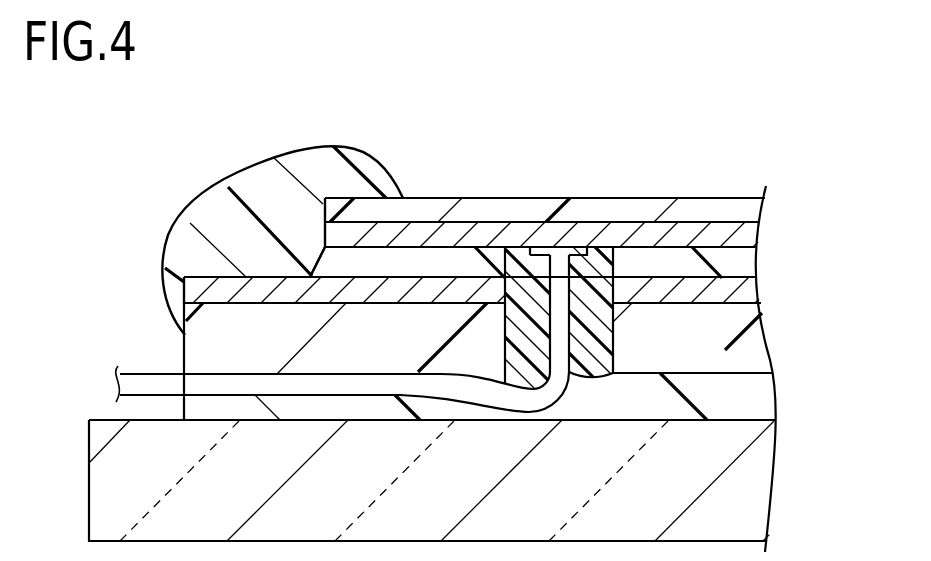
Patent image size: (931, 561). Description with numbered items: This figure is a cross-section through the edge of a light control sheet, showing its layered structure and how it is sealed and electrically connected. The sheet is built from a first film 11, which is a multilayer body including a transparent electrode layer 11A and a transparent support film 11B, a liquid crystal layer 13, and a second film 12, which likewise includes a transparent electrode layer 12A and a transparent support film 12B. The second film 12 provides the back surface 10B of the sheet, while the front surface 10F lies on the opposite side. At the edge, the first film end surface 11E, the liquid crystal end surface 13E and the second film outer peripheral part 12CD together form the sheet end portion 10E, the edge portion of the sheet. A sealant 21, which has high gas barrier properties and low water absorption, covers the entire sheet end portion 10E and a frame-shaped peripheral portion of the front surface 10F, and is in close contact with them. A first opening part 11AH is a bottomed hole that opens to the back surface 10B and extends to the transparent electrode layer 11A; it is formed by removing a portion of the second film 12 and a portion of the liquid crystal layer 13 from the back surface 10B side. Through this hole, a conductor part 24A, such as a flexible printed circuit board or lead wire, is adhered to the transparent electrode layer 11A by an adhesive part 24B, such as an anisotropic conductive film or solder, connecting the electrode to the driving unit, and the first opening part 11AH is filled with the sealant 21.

The back surface 10B is at (752, 375).
The sheet end portion 10E is at (194, 223).
The front surface 10F is at (722, 199).
The first film 11 is at (597, 225).
The transparent electrode layer 11A is at (748, 236).
The transparent support film 11B is at (748, 211).
The first opening part 11AH is at (602, 247).
The first film end surface 11E is at (323, 250).
The second film 12 is at (527, 348).
The transparent electrode layer 12A is at (748, 290).
The transparent support film 12B is at (755, 342).
The second film outer peripheral part 12CD is at (263, 277).
The liquid crystal layer 13 is at (748, 262).
The liquid crystal end surface 13E is at (315, 277).
The sealant 21 is at (307, 147).
The conductor part 24A is at (143, 374).
The adhesive part 24B is at (563, 247).